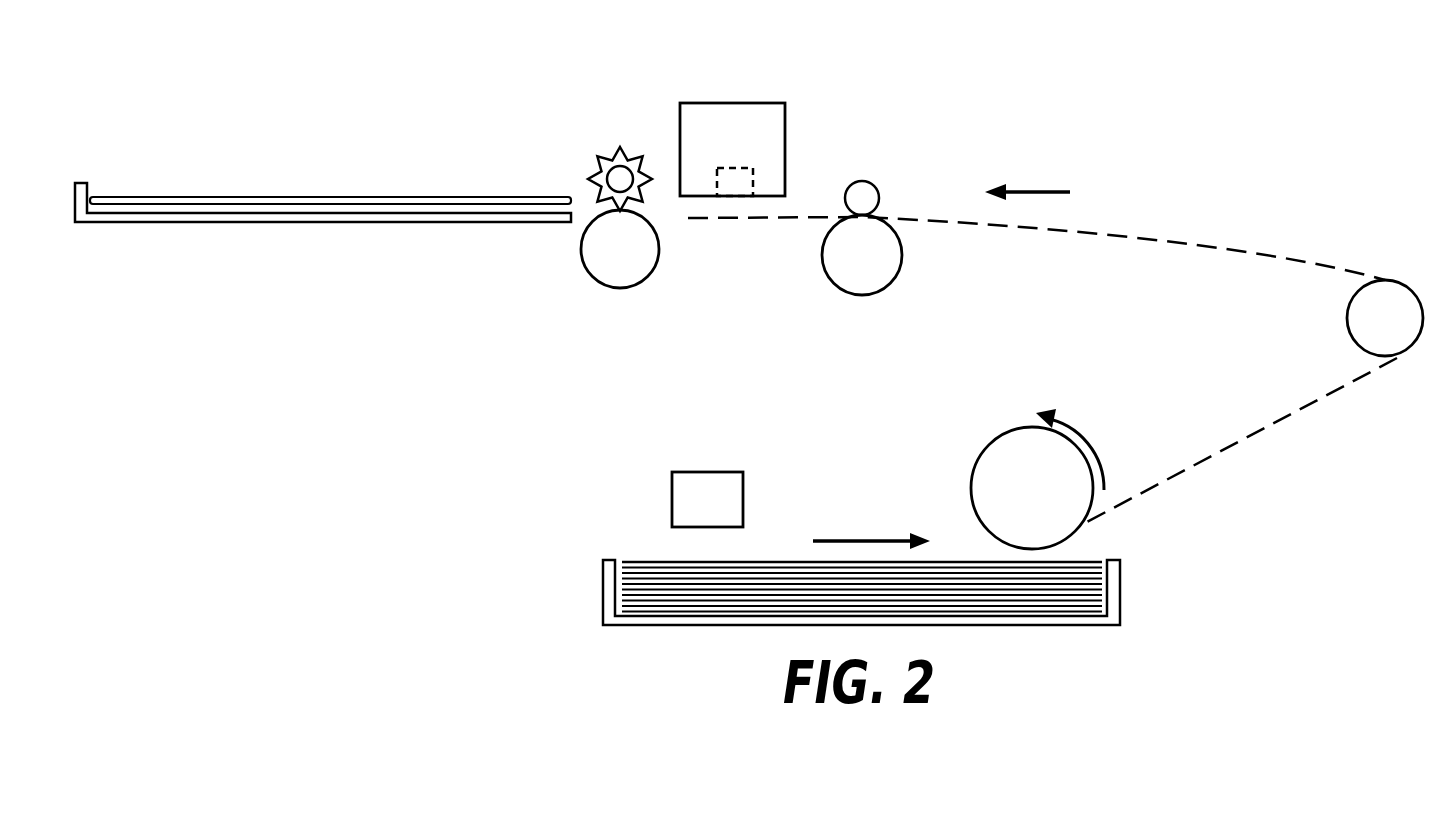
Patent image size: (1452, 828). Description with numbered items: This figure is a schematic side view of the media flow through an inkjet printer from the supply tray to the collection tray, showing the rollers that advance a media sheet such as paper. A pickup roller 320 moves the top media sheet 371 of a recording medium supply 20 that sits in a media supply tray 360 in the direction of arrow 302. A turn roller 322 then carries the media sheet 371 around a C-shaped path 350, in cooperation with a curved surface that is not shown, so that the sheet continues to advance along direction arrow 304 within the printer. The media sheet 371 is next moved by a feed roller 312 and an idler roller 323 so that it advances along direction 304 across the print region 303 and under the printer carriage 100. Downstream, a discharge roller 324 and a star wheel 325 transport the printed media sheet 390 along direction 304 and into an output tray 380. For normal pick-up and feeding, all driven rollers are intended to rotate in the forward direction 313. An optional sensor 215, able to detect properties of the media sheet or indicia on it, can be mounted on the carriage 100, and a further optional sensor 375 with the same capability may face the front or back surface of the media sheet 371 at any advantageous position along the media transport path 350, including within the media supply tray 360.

The recording medium supply 20 is at (669, 553).
The printer carriage 100 is at (760, 103).
The sensor 215 is at (728, 166).
The arrow 302 is at (871, 538).
The print region 303 is at (788, 205).
The direction arrow 304 is at (1035, 190).
The feed roller 312 is at (900, 270).
The forward direction 313 is at (1095, 440).
The pickup roller 320 is at (985, 445).
The turn roller 322 is at (1345, 334).
The idler roller 323 is at (870, 183).
The discharge roller 324 is at (592, 283).
The star wheel 325 is at (592, 180).
The C-shaped path 350 is at (1275, 447).
The media supply tray 360 is at (680, 625).
The top media sheet 371 is at (640, 560).
The sensor 375 is at (707, 472).
The output tray 380 is at (347, 222).
The printed media sheet 390 is at (344, 197).